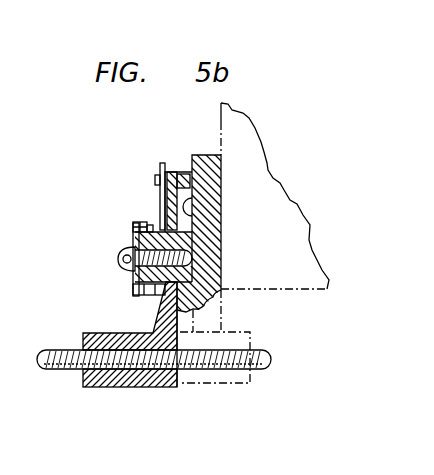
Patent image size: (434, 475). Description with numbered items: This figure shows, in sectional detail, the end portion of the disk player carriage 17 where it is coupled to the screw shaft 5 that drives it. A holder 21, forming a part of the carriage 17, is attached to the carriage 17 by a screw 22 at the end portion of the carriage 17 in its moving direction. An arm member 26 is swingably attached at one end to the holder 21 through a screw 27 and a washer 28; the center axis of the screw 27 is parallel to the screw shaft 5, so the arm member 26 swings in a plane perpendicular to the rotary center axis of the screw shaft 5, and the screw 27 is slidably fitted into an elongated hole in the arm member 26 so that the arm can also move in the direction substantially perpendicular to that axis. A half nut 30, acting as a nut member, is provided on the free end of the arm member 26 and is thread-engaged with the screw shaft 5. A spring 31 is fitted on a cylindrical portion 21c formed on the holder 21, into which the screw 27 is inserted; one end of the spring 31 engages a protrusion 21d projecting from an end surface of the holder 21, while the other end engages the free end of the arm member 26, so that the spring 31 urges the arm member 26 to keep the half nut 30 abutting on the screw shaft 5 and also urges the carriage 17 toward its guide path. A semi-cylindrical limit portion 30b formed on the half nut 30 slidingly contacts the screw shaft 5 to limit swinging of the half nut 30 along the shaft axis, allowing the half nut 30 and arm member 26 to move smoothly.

The screw shaft 5 is at (262, 348).
The carriage 17 is at (297, 193).
The holder 21 is at (221, 294).
The cylindrical portion 21c is at (136, 284).
The protrusion 21d is at (158, 182).
The screw 22 is at (170, 188).
The arm member 26 is at (151, 325).
The screw 27 is at (120, 258).
The washer 28 is at (135, 230).
The half nut 30 is at (163, 394).
The limit portion 30b is at (113, 389).
The spring 31 is at (150, 221).